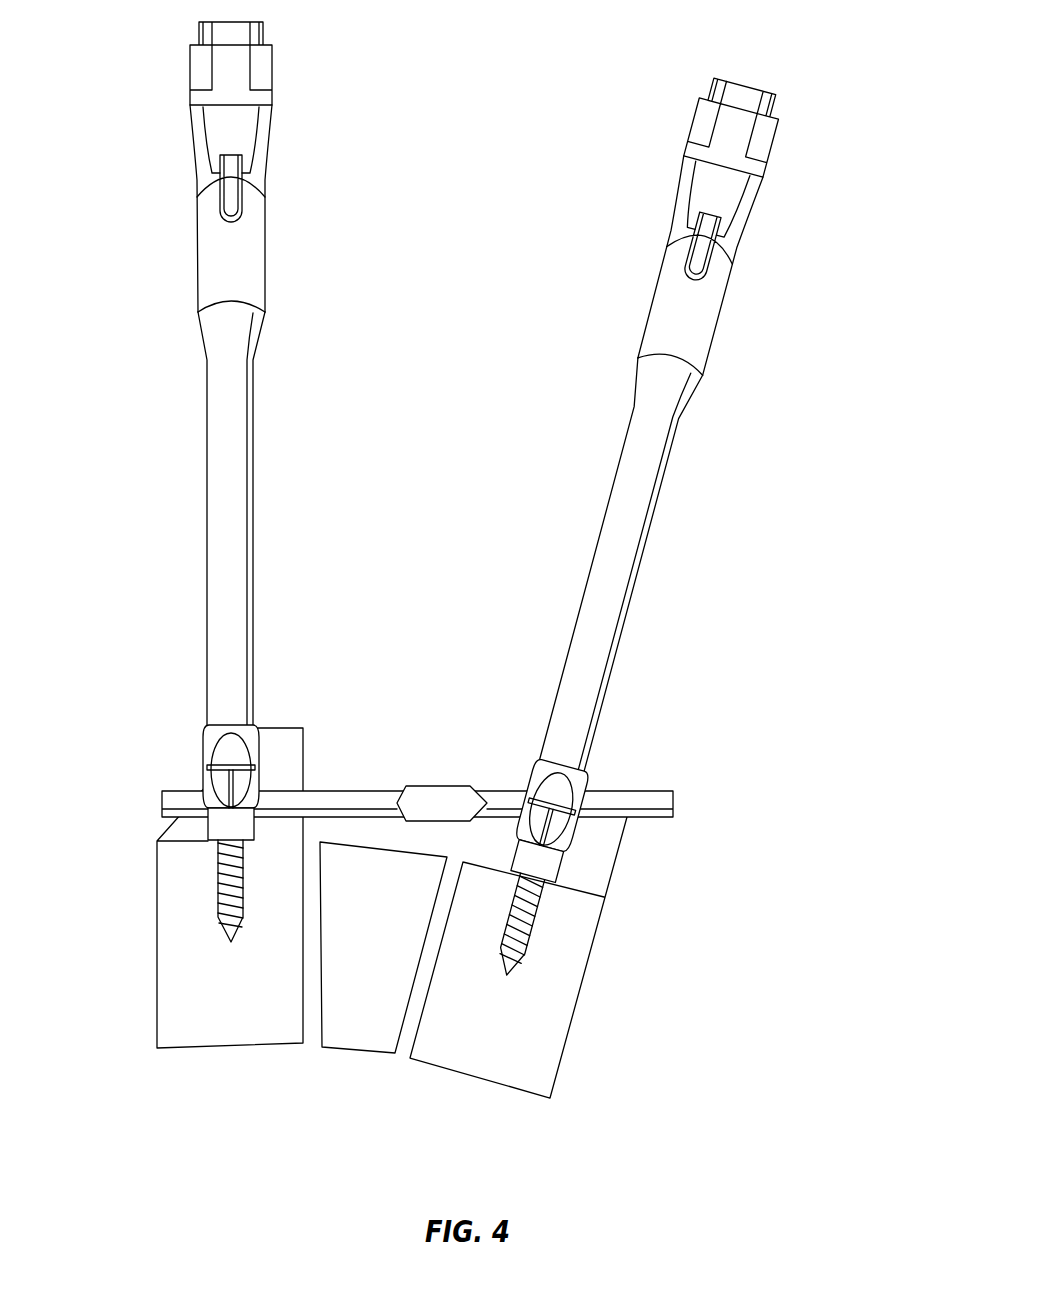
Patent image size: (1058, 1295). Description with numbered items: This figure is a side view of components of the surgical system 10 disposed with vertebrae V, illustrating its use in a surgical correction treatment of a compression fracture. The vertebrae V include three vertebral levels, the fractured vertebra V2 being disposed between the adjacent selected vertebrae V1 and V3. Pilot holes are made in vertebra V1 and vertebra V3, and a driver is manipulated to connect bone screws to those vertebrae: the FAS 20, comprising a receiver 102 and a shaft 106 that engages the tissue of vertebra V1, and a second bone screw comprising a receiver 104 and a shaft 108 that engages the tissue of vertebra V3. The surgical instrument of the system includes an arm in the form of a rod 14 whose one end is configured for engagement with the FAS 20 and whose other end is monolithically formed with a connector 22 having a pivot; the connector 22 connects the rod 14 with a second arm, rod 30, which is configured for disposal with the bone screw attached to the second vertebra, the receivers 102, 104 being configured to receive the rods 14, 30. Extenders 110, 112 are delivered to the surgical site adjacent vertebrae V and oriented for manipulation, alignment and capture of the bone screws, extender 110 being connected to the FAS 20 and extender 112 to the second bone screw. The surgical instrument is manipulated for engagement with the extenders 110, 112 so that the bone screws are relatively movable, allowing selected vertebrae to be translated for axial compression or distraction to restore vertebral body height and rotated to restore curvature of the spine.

The surgical system 10 is at (470, 513).
The rod 14 is at (178, 800).
The FAS 20 is at (166, 834).
The connector 22 is at (436, 803).
The rod 30 is at (658, 798).
The receiver 102 is at (210, 826).
The receiver 104 is at (537, 868).
The shaft 106 is at (222, 864).
The shaft 108 is at (530, 930).
The extender 110 is at (227, 280).
The extender 112 is at (693, 320).
The vertebra V1 is at (172, 1010).
The fractured vertebra V2 is at (358, 1028).
The vertebra V3 is at (525, 1058).
The vertebrae V is at (188, 1093).